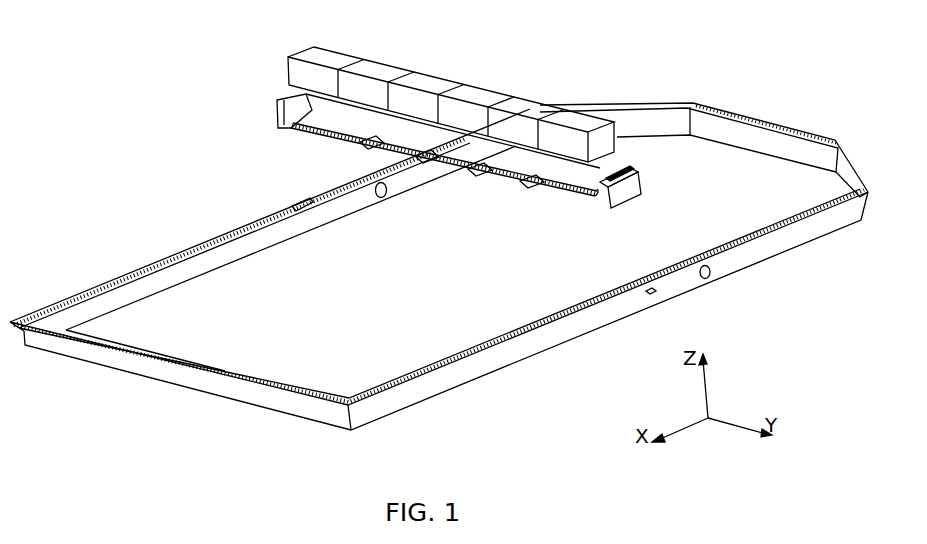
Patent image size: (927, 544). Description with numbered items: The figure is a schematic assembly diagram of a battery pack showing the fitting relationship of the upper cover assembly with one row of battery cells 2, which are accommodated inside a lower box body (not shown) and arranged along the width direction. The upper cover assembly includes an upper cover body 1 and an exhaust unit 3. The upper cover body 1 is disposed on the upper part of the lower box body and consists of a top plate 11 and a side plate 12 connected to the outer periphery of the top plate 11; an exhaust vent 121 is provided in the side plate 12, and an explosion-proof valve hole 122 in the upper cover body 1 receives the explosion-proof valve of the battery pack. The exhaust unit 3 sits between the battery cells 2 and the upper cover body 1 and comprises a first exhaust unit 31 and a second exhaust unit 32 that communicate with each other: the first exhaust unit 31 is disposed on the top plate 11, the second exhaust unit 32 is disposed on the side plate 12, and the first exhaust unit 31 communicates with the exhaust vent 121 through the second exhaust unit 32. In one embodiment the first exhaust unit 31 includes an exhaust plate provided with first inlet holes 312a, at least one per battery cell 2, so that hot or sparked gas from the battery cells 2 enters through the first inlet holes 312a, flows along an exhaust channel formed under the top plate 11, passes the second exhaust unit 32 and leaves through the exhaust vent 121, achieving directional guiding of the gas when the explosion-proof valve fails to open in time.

The upper cover body 1 is at (439, 269).
The top plate 11 is at (217, 283).
The side plate 12 is at (148, 282).
The exhaust vent 121 is at (300, 197).
The explosion-proof valve hole 122 is at (382, 200).
The battery cell 2 is at (393, 64).
The exhaust unit 3 is at (459, 196).
The first exhaust unit 31 is at (567, 194).
The first inlet hole 312a is at (477, 172).
The second exhaust unit 32 is at (605, 212).